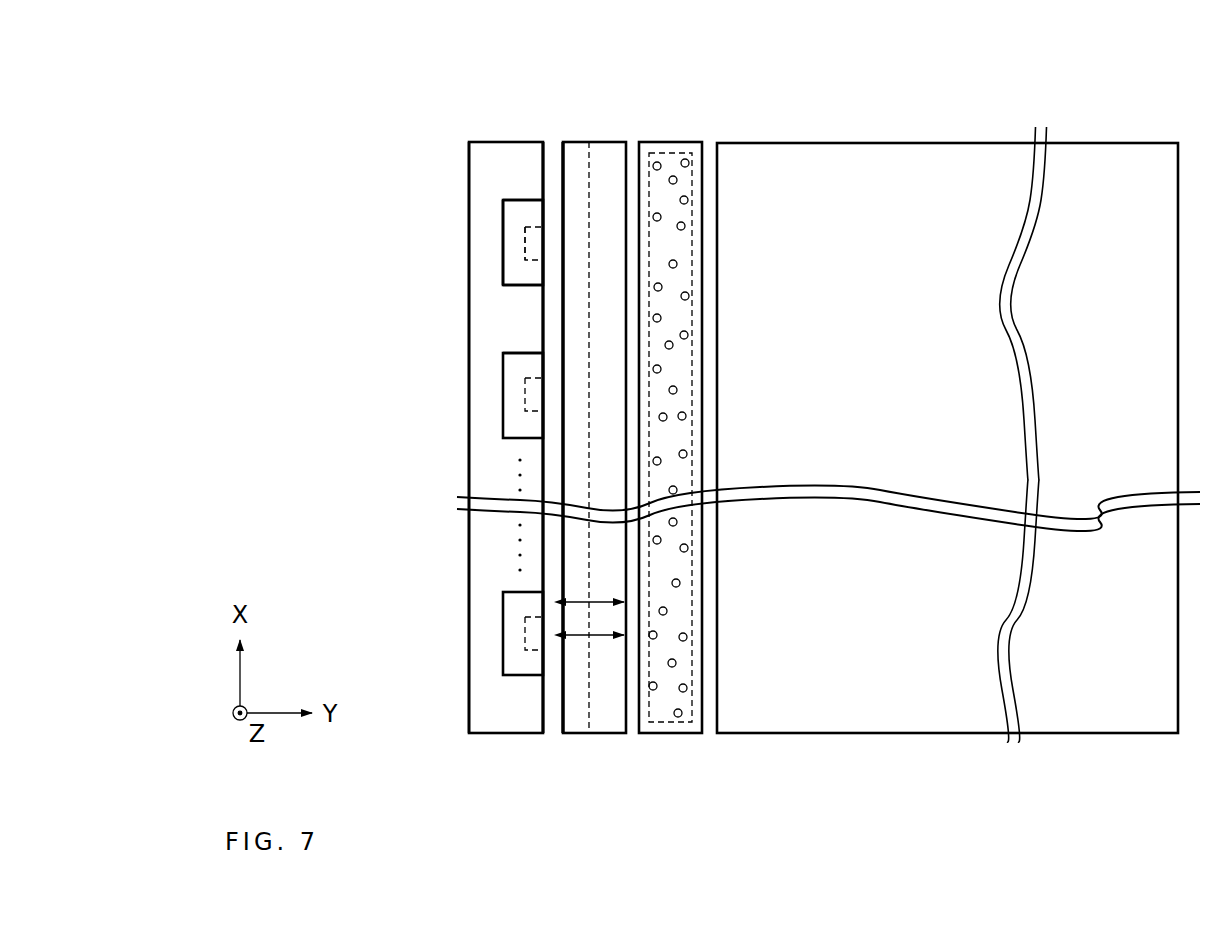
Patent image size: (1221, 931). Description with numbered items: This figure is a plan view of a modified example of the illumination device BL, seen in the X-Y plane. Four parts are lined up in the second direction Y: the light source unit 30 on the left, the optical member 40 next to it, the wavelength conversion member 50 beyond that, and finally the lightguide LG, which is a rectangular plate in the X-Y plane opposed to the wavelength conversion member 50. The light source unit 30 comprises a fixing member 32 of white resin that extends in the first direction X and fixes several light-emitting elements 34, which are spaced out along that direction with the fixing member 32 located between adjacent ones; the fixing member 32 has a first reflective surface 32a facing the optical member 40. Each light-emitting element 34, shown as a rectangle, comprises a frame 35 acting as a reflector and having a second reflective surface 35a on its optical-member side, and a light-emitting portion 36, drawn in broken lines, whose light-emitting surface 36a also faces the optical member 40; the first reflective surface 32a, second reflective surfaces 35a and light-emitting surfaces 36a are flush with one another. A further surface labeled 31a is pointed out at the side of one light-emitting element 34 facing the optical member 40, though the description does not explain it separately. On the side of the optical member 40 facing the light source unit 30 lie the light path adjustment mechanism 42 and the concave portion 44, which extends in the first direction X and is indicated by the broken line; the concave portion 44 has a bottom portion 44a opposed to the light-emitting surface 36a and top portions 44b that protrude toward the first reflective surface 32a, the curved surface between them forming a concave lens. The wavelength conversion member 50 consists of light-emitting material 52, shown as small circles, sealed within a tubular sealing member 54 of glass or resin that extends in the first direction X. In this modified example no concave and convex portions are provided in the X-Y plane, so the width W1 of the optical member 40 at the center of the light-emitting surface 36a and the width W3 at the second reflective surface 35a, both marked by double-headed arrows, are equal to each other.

The light source unit 30 is at (477, 738).
The upper surface of projection 31a is at (549, 343).
The fixing member 32 is at (468, 717).
The first reflective surface 32a is at (549, 165).
The light-emitting element 34 is at (492, 240).
The frame 35 is at (503, 214).
The second reflective surface 35a is at (549, 213).
The light-emitting portion 36 is at (520, 248).
The light-emitting surface 36a is at (549, 240).
The optical member 40 is at (603, 736).
The light path adjustment mechanism 42 is at (563, 740).
The concave portion 44 is at (561, 702).
The bottom portion 44a is at (594, 343).
The top portion 44b is at (559, 480).
The wavelength conversion member 50 is at (678, 736).
The light-emitting material 52 is at (686, 222).
The sealing member 54 is at (683, 141).
The lightguide LG is at (733, 736).
The illumination device BL is at (1082, 120).
The width W1 is at (595, 637).
The width W3 is at (597, 600).